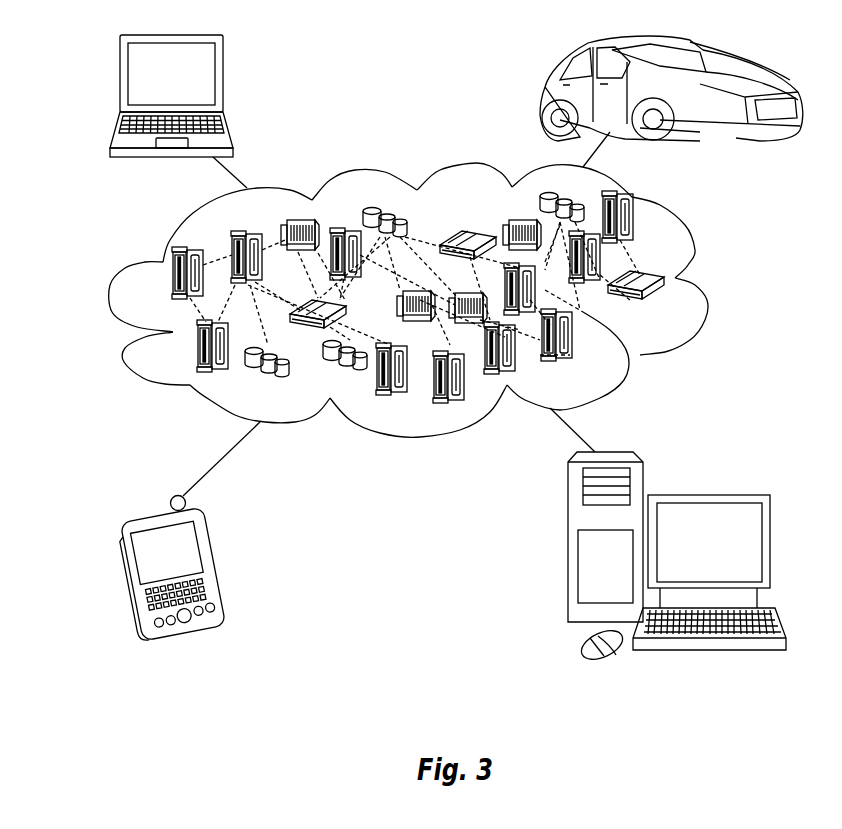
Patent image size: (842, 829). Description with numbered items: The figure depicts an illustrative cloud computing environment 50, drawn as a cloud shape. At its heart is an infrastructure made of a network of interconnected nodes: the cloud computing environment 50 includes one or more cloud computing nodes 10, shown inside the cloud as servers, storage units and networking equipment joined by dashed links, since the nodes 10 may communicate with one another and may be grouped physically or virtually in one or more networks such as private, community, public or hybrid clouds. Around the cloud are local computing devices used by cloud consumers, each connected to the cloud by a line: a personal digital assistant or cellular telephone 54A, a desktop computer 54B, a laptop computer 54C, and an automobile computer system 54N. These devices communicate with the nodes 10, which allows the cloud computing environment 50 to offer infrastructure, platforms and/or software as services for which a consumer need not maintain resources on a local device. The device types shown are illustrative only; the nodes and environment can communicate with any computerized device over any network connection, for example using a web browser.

The cloud computing nodes 10 is at (680, 315).
The cloud computing environment 50 is at (705, 282).
The personal digital assistant or cellular telephone 54A is at (210, 552).
The desktop computer 54B is at (725, 493).
The laptop computer 54C is at (223, 68).
The automobile computer system 54N is at (548, 78).